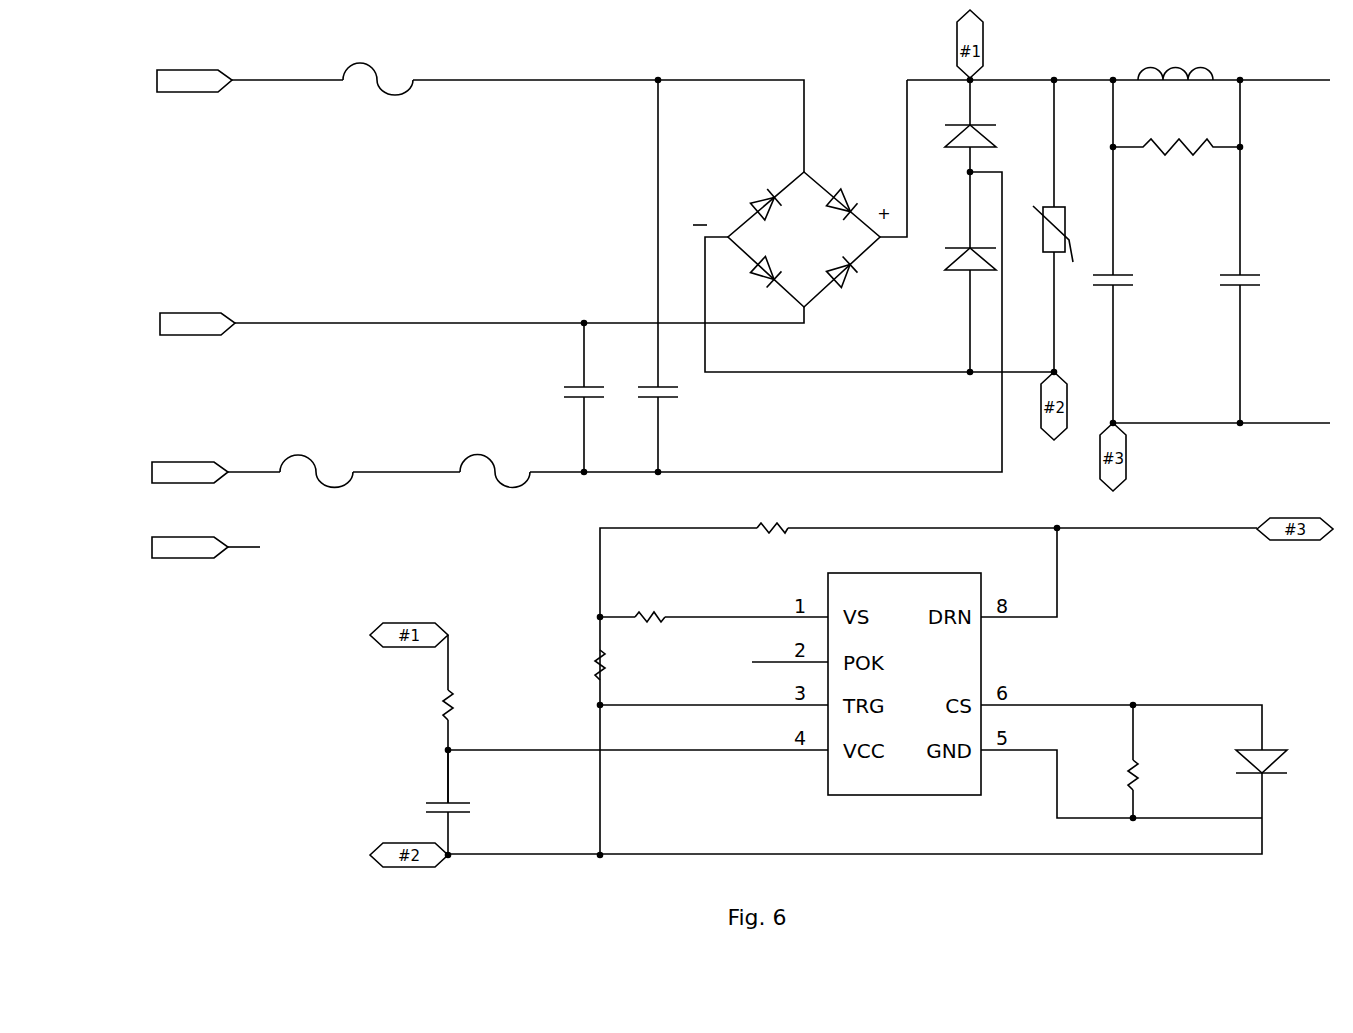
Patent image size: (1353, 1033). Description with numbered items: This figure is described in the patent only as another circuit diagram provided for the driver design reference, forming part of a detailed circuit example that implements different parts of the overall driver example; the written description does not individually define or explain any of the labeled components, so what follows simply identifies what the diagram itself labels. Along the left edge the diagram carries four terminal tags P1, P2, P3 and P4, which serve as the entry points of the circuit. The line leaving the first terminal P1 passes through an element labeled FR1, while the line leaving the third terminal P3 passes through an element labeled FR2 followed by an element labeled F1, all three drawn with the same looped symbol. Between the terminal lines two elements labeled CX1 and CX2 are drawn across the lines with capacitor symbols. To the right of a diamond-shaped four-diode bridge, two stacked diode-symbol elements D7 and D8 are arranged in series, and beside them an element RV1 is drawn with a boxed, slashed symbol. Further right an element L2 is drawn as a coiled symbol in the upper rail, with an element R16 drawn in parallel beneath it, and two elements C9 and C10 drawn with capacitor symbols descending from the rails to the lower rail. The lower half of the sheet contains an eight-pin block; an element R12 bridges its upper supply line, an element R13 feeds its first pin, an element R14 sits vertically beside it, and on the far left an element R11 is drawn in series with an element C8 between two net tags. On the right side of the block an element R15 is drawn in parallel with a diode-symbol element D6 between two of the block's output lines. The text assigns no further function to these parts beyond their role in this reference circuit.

The input terminal P1 is at (194, 82).
The input terminal P2 is at (197, 325).
The input terminal P3 is at (190, 474).
The input terminal P4 is at (190, 549).
The fusible resistor FR1 is at (378, 65).
The fusible resistor FR2 is at (316, 454).
The fuse F1 is at (495, 454).
The X capacitor CX1 is at (555, 397).
The X capacitor CX2 is at (687, 276).
The diode D7 is at (990, 126).
The diode D8 is at (953, 272).
The varistor RV1 is at (1068, 226).
The inductor L2 is at (1175, 58).
The resistor R16 is at (1176, 136).
The capacitor C9 is at (1124, 251).
The capacitor C10 is at (1223, 251).
The resistor R12 is at (769, 545).
The resistor R13 is at (637, 606).
The resistor R14 is at (628, 666).
The resistor R11 is at (475, 719).
The capacitor C8 is at (467, 802).
The resistor R15 is at (1162, 761).
The diode D6 is at (1284, 758).